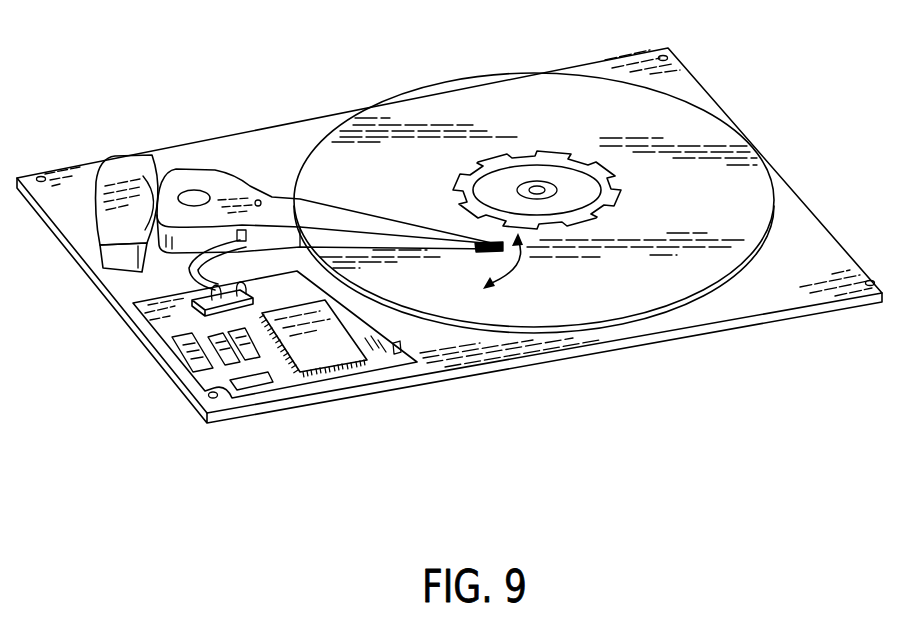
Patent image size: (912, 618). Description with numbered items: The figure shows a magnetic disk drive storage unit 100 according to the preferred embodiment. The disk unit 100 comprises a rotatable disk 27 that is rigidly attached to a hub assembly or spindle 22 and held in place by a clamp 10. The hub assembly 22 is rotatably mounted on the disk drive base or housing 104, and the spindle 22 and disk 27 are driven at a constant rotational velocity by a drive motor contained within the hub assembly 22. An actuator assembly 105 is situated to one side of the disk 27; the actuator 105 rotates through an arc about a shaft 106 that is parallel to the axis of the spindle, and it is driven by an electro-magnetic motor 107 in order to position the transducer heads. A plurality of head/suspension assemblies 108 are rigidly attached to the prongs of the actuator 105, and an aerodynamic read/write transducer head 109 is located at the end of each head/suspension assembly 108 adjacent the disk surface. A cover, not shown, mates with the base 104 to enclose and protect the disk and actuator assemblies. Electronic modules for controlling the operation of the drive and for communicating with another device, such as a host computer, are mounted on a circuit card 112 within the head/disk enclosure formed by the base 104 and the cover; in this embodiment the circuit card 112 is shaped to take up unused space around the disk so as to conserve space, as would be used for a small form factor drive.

The magnetic disk drive storage unit 100 is at (309, 104).
The disk drive base 104 is at (710, 95).
The rotatable disk 27 is at (752, 182).
The clamp 10 is at (622, 178).
The hub assembly 22 is at (522, 172).
The electro-magnetic motor 107 is at (115, 168).
The actuator assembly 105 is at (246, 182).
The shaft 106 is at (193, 190).
The head/suspension assembly 108 is at (370, 213).
The read/write transducer head 109 is at (486, 255).
The circuit card 112 is at (298, 377).